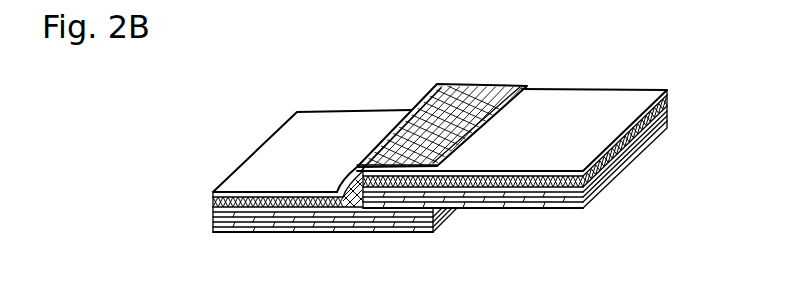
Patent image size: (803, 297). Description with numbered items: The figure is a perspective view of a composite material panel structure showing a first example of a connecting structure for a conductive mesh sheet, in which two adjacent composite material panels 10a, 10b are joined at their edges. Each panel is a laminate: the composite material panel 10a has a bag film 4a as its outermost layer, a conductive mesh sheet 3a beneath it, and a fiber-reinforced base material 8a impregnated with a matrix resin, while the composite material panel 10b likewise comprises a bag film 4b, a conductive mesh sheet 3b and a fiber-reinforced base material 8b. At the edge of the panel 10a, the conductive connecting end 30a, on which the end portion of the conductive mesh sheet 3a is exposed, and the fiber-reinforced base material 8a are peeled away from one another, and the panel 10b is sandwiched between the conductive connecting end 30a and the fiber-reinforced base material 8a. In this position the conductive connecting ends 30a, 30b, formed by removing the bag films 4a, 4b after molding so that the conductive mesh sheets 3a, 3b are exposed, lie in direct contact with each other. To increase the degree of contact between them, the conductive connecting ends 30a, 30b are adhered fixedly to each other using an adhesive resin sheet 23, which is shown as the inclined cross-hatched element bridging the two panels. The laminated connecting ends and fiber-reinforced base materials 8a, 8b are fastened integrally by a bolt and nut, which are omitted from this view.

The composite material panel 10a is at (335, 160).
The composite material panel 10b is at (512, 139).
The bag film 4a is at (335, 122).
The bag film 4b is at (584, 100).
The conductive mesh sheet 3a is at (244, 206).
The conductive mesh sheet 3b is at (505, 190).
The fiber-reinforced base material 8a is at (282, 216).
The fiber-reinforced base material 8b is at (540, 191).
The adhesive resin sheet 23 is at (515, 85).
The conductive connecting end 30a is at (412, 178).
The conductive connecting end 30b is at (376, 190).